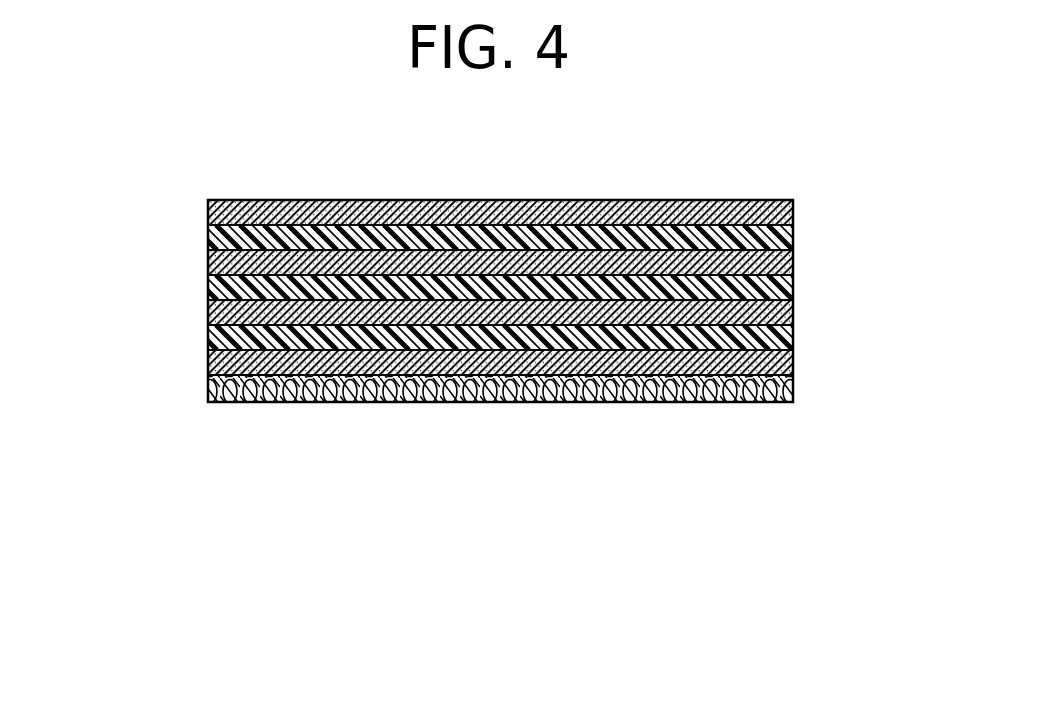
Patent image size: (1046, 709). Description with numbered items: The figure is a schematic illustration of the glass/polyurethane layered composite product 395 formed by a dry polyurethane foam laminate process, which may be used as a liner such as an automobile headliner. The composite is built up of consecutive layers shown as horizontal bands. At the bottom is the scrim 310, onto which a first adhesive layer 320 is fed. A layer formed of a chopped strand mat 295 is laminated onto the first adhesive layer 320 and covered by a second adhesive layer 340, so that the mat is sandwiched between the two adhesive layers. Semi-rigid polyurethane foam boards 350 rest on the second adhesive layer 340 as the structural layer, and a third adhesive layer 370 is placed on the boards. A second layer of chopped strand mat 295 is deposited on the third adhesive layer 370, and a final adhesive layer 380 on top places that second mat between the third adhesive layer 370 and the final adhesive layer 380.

The layered composite product 395 is at (502, 300).
The final adhesive layer 380 is at (477, 200).
The chopped strand mat 295 is at (208, 240).
The third adhesive layer 370 is at (793, 261).
The polyurethane foam boards 350 is at (208, 290).
The second adhesive layer 340 is at (793, 311).
The first adhesive layer 320 is at (793, 360).
The scrim 310 is at (577, 403).